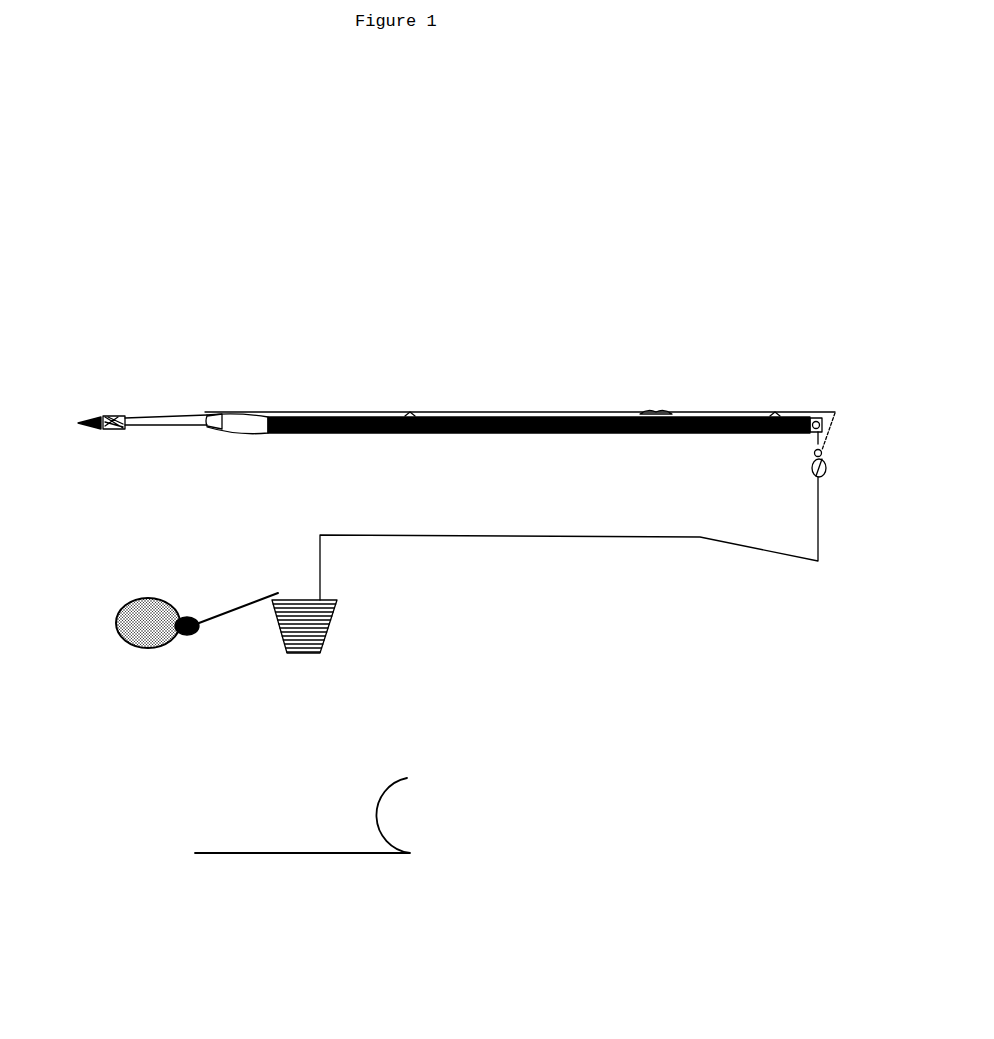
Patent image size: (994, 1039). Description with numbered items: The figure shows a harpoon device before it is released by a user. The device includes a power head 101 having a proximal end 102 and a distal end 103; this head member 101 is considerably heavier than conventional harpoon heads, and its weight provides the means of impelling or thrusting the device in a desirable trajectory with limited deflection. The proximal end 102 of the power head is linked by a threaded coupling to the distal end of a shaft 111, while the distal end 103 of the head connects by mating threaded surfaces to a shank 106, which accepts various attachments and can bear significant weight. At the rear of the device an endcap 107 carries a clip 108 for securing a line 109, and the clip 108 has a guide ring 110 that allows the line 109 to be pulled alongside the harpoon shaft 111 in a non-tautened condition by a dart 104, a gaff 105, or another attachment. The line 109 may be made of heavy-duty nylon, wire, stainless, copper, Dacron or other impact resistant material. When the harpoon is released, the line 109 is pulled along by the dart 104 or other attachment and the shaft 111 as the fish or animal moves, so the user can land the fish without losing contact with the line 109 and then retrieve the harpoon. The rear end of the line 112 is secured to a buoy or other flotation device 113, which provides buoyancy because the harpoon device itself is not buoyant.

The power head 101 is at (247, 425).
The proximal end 102 is at (263, 413).
The distal end 103 is at (214, 425).
The dart 104 is at (93, 420).
The gaff 105 is at (242, 851).
The shank 106 is at (193, 422).
The endcap 107 is at (814, 418).
The clip 108 is at (822, 452).
The line 109 is at (818, 518).
The guide ring 110 is at (828, 466).
The harpoon shaft 111 is at (506, 412).
The rear end of the line 112 is at (234, 612).
The buoy 113 is at (117, 625).